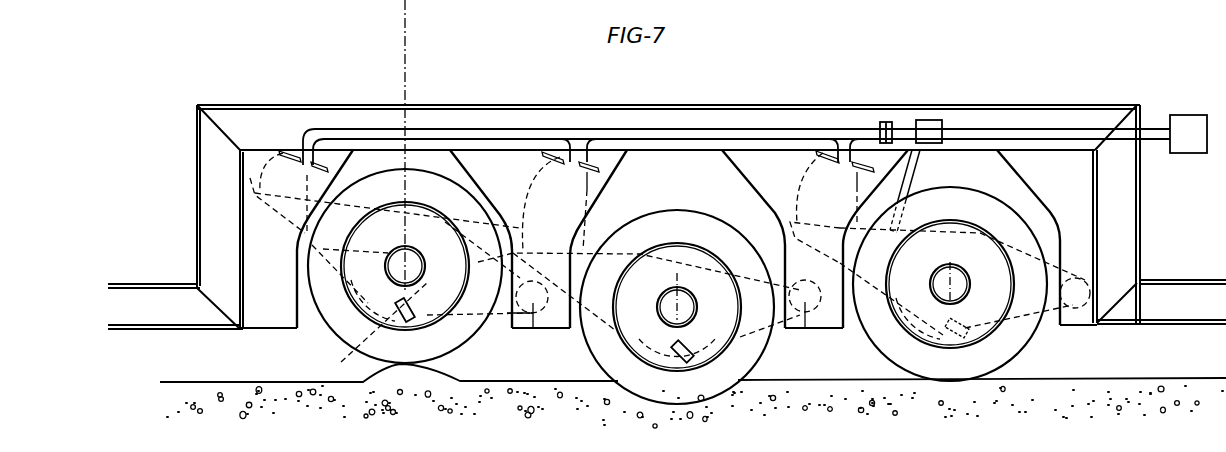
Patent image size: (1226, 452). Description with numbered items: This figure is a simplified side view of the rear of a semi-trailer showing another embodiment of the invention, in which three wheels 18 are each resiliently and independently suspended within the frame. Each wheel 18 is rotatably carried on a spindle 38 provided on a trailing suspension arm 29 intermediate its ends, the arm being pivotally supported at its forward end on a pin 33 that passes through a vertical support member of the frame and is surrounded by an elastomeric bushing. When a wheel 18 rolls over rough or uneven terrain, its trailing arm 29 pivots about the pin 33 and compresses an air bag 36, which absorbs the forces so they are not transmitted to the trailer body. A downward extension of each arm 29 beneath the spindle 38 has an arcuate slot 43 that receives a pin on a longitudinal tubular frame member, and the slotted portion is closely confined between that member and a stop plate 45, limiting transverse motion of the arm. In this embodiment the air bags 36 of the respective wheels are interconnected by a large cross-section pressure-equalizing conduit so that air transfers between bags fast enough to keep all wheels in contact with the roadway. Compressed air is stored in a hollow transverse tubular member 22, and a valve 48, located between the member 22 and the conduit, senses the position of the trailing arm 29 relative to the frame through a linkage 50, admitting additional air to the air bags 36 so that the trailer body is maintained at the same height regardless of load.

The wheel 18 is at (453, 338).
The transverse tubular member 22 is at (1203, 88).
The trailing suspension arm 29 is at (330, 328).
The pin 33 is at (533, 313).
The air bag 36 is at (262, 185).
The spindle 38 is at (310, 246).
The arcuate slot 43 is at (414, 296).
The stop plate 45 is at (341, 362).
The valve 48 is at (933, 119).
The linkage 50 is at (921, 165).